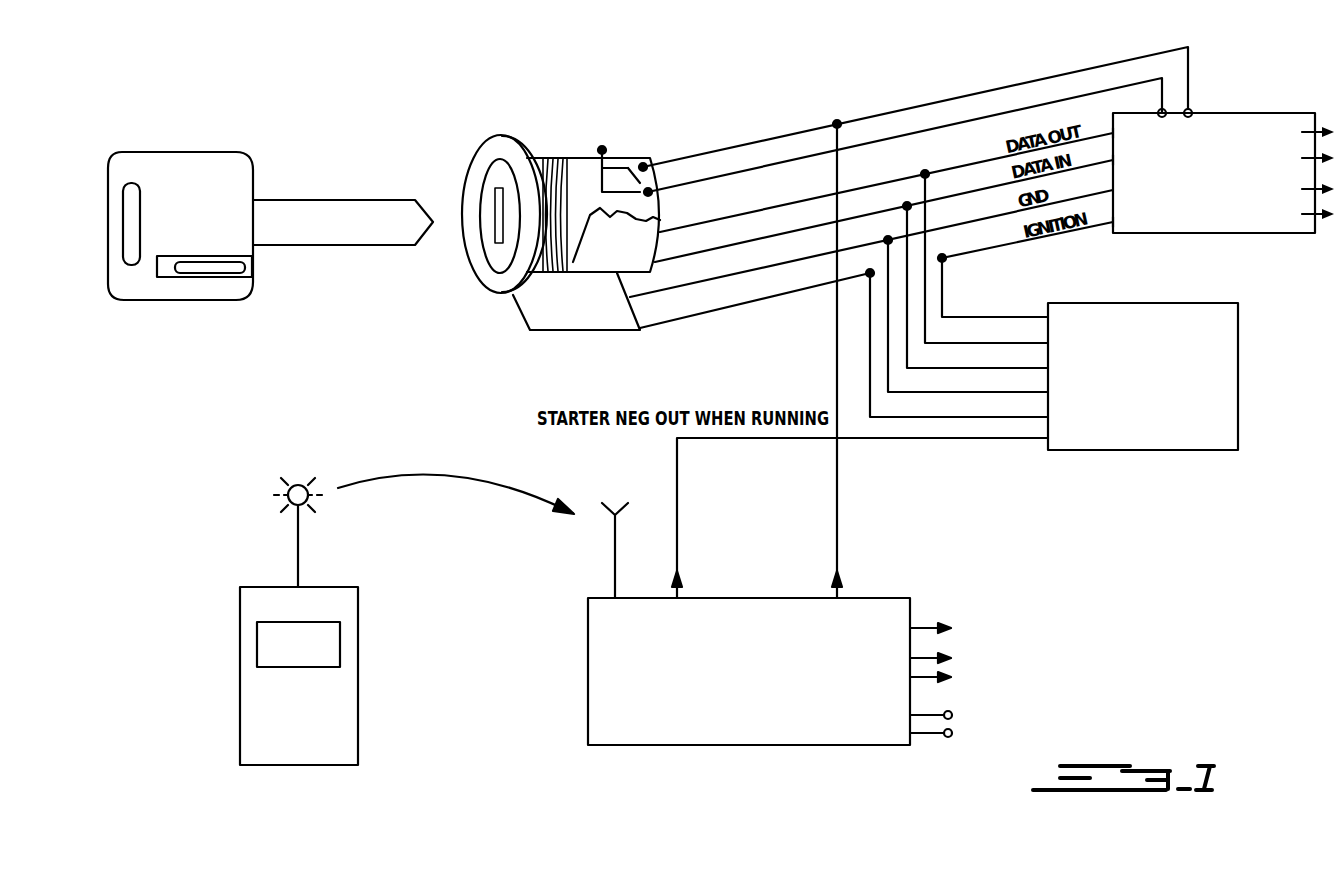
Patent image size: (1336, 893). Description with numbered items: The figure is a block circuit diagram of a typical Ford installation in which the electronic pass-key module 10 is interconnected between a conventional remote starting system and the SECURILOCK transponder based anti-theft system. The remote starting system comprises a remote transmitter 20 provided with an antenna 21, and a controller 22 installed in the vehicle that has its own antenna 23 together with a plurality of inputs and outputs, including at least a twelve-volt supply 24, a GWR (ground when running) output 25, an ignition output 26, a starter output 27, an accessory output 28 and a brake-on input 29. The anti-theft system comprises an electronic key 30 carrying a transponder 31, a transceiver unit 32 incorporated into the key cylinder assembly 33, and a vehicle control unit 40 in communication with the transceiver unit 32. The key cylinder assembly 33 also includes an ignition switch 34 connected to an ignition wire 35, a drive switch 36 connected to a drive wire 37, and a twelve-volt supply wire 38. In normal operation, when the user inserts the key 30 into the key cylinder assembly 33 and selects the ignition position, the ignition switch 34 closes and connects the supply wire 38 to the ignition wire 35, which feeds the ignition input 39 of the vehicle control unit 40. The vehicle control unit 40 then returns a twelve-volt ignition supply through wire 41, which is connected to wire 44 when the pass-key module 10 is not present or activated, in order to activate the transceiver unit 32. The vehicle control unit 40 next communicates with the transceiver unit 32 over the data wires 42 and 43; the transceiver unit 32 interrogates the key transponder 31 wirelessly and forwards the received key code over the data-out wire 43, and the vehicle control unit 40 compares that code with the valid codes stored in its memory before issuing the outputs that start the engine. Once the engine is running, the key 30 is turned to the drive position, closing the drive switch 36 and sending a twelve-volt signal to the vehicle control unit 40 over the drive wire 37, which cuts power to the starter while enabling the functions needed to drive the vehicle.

The electronic pass-key module 10 is at (1215, 451).
The remote transmitter 20 is at (358, 720).
The antenna 21 is at (299, 548).
The controller 22 is at (752, 746).
The antenna 23 is at (614, 552).
The 12V supply 24 is at (932, 735).
The GWR output 25 is at (679, 543).
The ignition output 26 is at (840, 543).
The starter output 27 is at (924, 626).
The accessory output 28 is at (932, 656).
The brake-on input 29 is at (936, 714).
The electronic key 30 is at (193, 152).
The transponder 31 is at (236, 272).
The transceiver unit 32 is at (548, 157).
The key cylinder assembly 33 is at (477, 156).
The ignition switch 34 is at (632, 158).
The ignition wire 35 is at (755, 141).
The drive switch 36 is at (652, 196).
The drive wire 37 is at (802, 159).
The 12V supply wire 38 is at (602, 146).
The ignition input 39 is at (1190, 109).
The vehicle control unit 40 is at (1213, 234).
The wire 41 is at (1126, 212).
The data wire 42 is at (1126, 156).
The data-out wire 43 is at (1126, 127).
The wire 44 is at (773, 298).